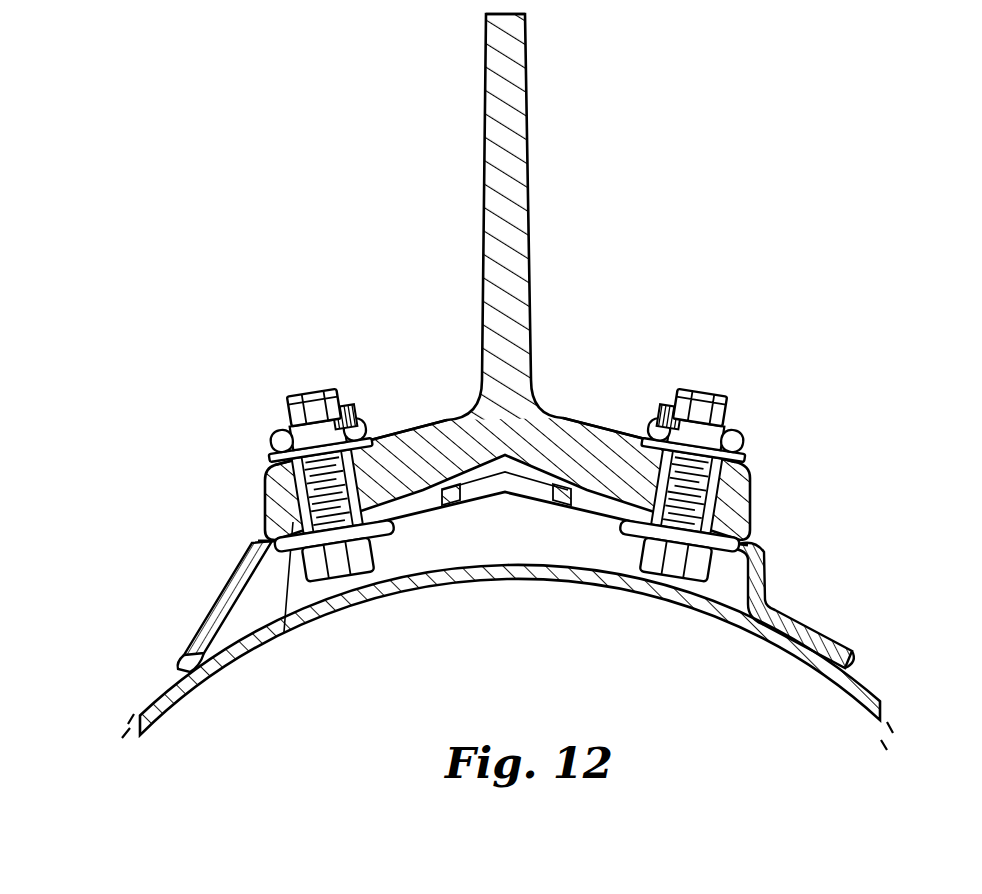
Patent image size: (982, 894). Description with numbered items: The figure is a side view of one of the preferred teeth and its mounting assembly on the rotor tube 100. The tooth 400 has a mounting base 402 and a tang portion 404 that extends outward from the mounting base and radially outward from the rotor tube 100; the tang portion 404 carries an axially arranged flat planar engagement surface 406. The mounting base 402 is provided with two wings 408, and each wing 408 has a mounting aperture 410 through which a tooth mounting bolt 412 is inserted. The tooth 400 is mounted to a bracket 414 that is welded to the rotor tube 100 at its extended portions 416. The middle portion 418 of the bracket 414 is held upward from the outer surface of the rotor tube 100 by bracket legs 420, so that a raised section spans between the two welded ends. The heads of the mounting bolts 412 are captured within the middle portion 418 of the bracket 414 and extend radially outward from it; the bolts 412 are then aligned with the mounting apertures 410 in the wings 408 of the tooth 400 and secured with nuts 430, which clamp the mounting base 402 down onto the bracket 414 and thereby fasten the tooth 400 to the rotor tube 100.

The rotor tube 100 is at (157, 697).
The tooth 400 is at (598, 153).
The mounting base 402 is at (555, 430).
The tang portion 404 is at (508, 216).
The flat planar engagement surface 406 is at (478, 87).
The wings 408 is at (442, 440).
The mounting aperture 410 is at (312, 583).
The tooth mounting bolt 412 is at (267, 490).
The bracket 414 is at (471, 522).
The extended portions 416 is at (197, 652).
The middle portion 418 is at (567, 500).
The bracket legs 420 is at (262, 590).
The nuts 430 is at (277, 440).